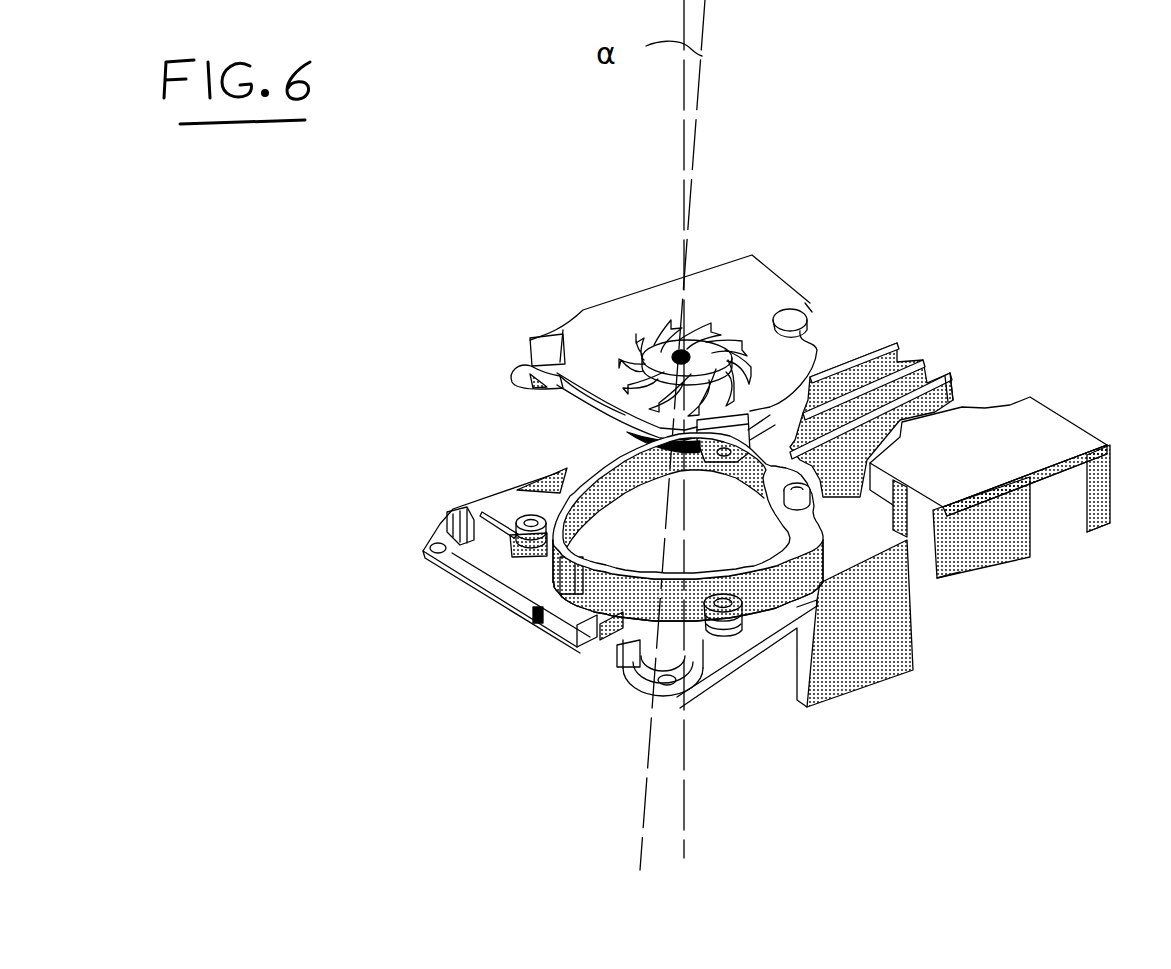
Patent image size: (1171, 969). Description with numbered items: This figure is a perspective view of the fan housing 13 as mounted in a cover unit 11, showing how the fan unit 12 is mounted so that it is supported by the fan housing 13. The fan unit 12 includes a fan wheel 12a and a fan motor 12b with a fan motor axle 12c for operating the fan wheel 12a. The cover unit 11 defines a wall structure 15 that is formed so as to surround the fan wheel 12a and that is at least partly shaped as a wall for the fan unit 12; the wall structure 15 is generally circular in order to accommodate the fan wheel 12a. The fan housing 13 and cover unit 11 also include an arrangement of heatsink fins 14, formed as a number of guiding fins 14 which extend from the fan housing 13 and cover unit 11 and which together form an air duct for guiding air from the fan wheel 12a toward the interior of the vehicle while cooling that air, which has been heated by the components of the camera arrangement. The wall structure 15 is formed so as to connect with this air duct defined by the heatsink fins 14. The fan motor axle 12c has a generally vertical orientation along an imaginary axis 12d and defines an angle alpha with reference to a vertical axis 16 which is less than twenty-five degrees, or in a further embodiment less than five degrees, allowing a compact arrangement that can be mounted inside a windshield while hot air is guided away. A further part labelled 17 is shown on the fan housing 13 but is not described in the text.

The cover unit 11 is at (487, 587).
The fan unit 12 is at (524, 303).
The fan wheel 12a is at (636, 348).
The fan motor 12b is at (632, 406).
The fan motor axle 12c is at (680, 357).
The imaginary axis 12d is at (696, 165).
The fan housing 13 is at (1051, 326).
The heatsink fins 14 is at (955, 400).
The wall structure 15 is at (600, 587).
The vertical axis 16 is at (688, 778).
The fan housing top 17 is at (773, 293).